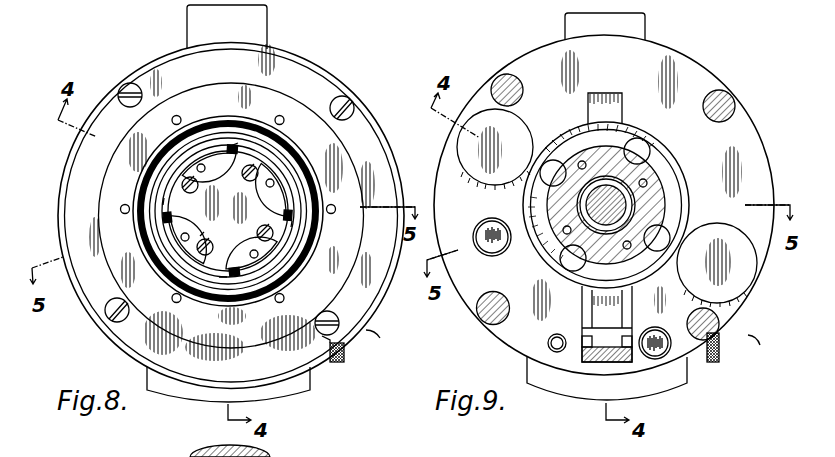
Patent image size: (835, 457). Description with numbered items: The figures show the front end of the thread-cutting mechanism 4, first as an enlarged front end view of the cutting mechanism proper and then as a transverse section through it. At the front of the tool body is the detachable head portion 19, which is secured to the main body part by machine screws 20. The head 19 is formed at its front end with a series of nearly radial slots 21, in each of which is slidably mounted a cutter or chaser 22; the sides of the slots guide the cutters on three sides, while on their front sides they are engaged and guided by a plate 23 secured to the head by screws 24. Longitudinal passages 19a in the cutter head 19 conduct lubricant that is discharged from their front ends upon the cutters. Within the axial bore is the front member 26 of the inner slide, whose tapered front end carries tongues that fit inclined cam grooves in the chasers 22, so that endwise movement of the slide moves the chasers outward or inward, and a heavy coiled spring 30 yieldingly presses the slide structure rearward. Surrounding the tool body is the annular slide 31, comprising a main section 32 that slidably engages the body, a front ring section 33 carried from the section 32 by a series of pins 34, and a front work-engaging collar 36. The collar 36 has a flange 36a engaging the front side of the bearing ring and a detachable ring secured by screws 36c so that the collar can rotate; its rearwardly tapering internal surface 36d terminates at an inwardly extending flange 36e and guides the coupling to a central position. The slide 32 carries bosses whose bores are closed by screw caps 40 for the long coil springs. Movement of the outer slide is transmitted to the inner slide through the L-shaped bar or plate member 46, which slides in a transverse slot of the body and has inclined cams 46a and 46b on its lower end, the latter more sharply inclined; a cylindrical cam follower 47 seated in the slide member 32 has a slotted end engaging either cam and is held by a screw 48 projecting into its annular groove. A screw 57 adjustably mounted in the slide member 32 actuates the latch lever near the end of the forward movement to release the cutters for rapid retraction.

In FIG. 8, the thread-cutting mechanism 4 is at (380, 338).
In FIG. 9, the thread-cutting mechanism 4 is at (760, 345).
In FIG. 8, the detachable head portion 19 is at (276, 186).
In FIG. 9, the detachable head portion 19 is at (656, 159).
In FIG. 8, the longitudinal passages 19a is at (265, 310).
In FIG. 9, the longitudinal passages 19a is at (580, 160).
In FIG. 9, the machine screws 20 is at (666, 230).
In FIG. 8, the nearly radial slots 21 is at (240, 160).
In FIG. 8, the cutter or chaser 22 is at (233, 145).
In FIG. 8, the plate 23 is at (200, 236).
In FIG. 8, the screws 24 is at (205, 233).
In FIG. 9, the front member of slide 26 is at (630, 202).
In FIG. 9, the coiled spring 30 is at (620, 273).
In FIG. 9, the annular slide 31 is at (763, 137).
In FIG. 8, the main slide section 32 is at (268, 33).
In FIG. 9, the main slide section 32 is at (688, 63).
In FIG. 8, the front ring section 33 is at (325, 86).
In FIG. 9, the pins 34 is at (503, 82).
In FIG. 8, the work-engaging collar 36 is at (318, 184).
In FIG. 8, the collar flange 36a is at (342, 157).
In FIG. 8, the screws 36c is at (175, 115).
In FIG. 8, the tapering internal surface 36d is at (150, 172).
In FIG. 8, the inwardly extending flange 36e is at (148, 230).
In FIG. 9, the screw caps 40 is at (462, 140).
In FIG. 9, the transversely slidable bar or plate member 46 is at (600, 356).
In FIG. 9, the inclined cam 46a is at (628, 345).
In FIG. 9, the inclined cam 46b is at (583, 340).
In FIG. 8, the cam follower 47 is at (340, 361).
In FIG. 9, the cam follower 47 is at (718, 358).
In FIG. 9, the screw 48 is at (670, 355).
In FIG. 9, the screw 57 is at (474, 226).